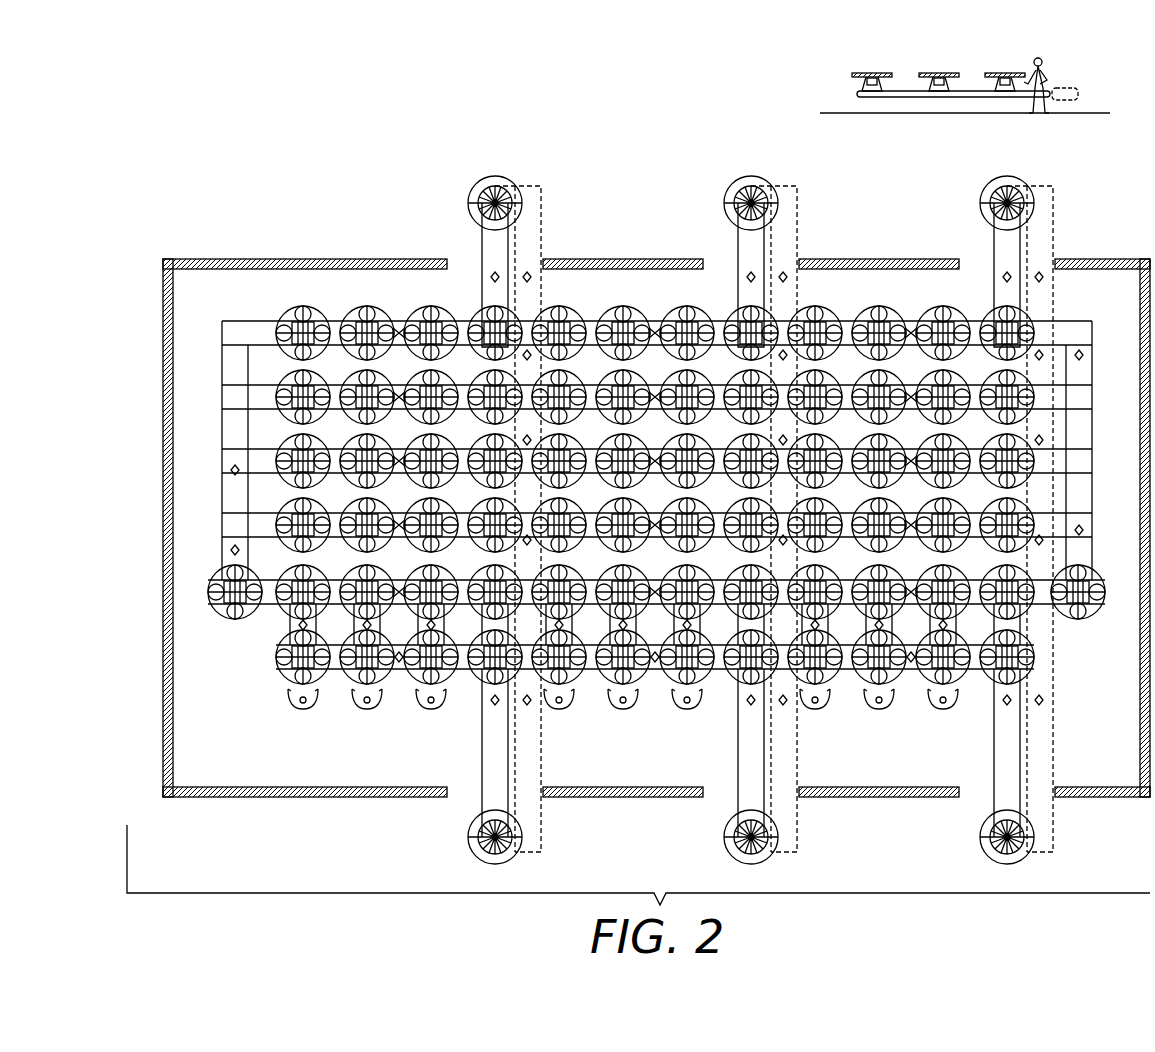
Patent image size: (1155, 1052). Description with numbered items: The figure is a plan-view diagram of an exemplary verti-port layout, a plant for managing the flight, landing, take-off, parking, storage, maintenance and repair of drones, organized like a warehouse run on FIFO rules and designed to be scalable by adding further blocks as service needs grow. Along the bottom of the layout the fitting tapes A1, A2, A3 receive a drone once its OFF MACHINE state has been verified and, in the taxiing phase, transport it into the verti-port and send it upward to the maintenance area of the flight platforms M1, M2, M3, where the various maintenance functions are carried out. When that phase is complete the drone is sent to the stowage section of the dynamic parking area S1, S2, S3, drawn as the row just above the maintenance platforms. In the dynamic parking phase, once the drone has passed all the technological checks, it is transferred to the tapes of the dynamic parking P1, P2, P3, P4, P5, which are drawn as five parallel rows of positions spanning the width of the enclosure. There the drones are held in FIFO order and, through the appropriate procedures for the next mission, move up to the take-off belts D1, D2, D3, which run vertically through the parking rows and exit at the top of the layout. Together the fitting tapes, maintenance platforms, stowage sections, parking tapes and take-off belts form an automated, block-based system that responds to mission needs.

The take-off belt D1 is at (580, 207).
The take-off belt D2 is at (835, 207).
The take-off belt D3 is at (1095, 207).
The fitting tape A1 is at (570, 882).
The fitting tape A2 is at (828, 882).
The fitting tape A3 is at (1073, 882).
The stowage section of the dynamic parking area S1 is at (248, 584).
The stowage section of the dynamic parking area S2 is at (505, 584).
The stowage section of the dynamic parking area S3 is at (760, 584).
The maintenance area of the flight platforms M1 is at (508, 649).
The maintenance area of the flight platforms M2 is at (764, 649).
The maintenance area of the flight platforms M3 is at (1014, 651).
The tape of the dynamic parking P1 is at (658, 584).
The tape of the dynamic parking P2 is at (1108, 522).
The tape of the dynamic parking P3 is at (1108, 474).
The tape of the dynamic parking P4 is at (1108, 409).
The tape of the dynamic parking P5 is at (1108, 345).